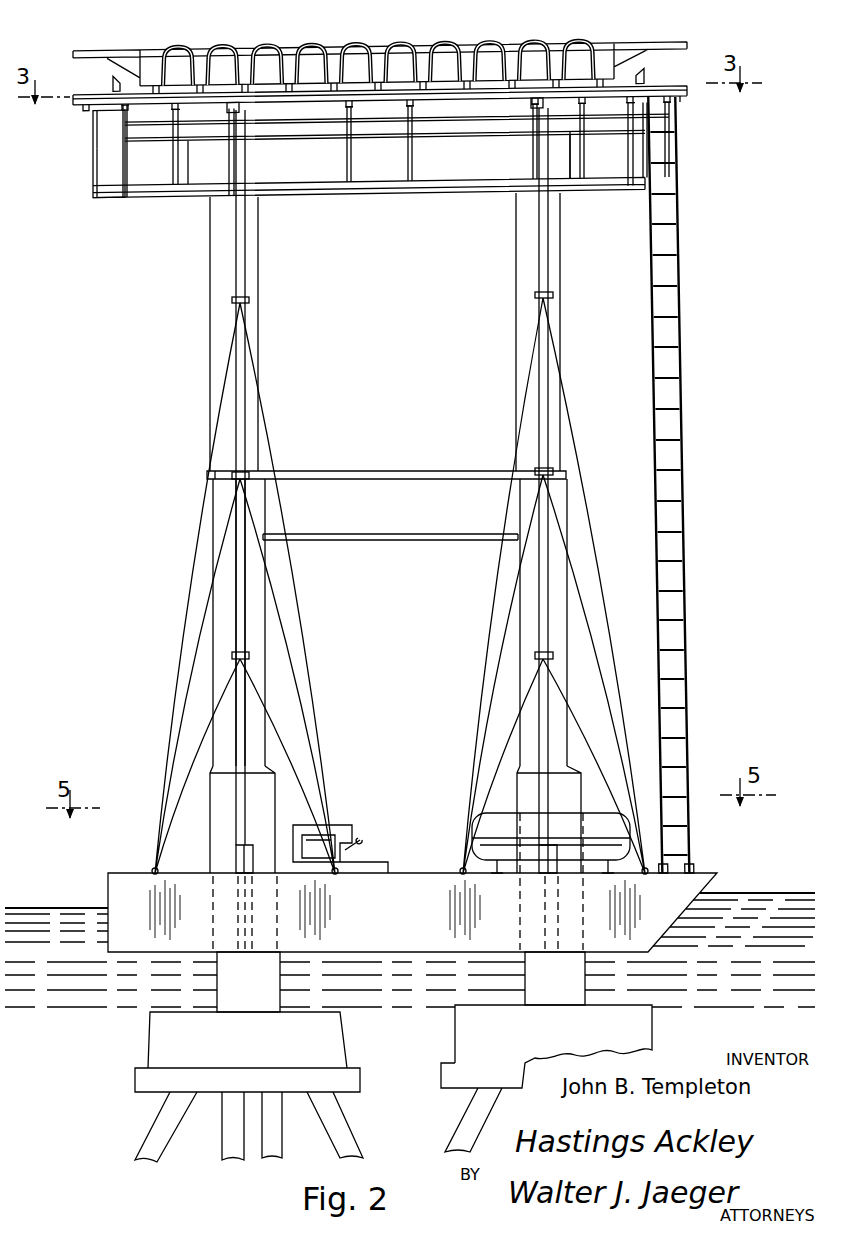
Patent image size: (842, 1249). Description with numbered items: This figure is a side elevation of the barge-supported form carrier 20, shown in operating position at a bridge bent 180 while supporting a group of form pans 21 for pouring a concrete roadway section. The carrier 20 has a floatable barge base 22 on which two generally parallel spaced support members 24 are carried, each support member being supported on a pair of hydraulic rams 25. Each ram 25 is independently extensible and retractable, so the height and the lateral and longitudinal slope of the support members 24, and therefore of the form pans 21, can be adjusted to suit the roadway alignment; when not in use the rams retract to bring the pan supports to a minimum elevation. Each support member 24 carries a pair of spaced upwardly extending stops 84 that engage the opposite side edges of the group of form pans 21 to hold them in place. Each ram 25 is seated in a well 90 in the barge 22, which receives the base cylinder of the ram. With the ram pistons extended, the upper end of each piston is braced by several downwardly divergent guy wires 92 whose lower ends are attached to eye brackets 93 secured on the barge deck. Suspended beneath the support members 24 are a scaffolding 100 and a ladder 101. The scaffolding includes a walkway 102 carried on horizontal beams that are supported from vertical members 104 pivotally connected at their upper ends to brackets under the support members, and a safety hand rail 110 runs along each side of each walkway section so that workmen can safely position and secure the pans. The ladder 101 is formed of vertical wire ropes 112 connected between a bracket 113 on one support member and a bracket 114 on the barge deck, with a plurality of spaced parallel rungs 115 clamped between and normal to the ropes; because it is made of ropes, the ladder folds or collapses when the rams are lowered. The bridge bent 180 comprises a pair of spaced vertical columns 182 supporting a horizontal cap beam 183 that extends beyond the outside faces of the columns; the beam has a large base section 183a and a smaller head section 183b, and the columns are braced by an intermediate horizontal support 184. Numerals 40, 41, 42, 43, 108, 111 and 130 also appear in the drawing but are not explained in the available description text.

The form carrier 20 is at (172, 334).
The form pans 21 is at (222, 50).
The floatable barge base 22 is at (104, 891).
The support members 24 is at (80, 110).
The hydraulic rams 25 is at (232, 393).
The lower mast section 40 is at (239, 807).
The second mast section 41 is at (244, 614).
The third mast section 42 is at (242, 420).
The upper mast section 43 is at (239, 262).
The stops 84 is at (113, 82).
The well 90 is at (236, 910).
The guy wires 92 is at (251, 374).
The eye brackets 93 is at (155, 873).
The scaffolding 100 is at (118, 160).
The ladder 101 is at (681, 364).
The walkway 102 is at (270, 190).
The vertical members 104 is at (164, 180).
The intermediate rail 108 is at (408, 166).
The safety hand rail 110 is at (316, 144).
The rail connector 111 is at (420, 162).
The vertical wire ropes 112 is at (686, 455).
The bracket 113 is at (666, 102).
The bracket 114 is at (686, 866).
The rungs 115 is at (680, 545).
The storage tank 130 is at (608, 804).
The bridge bent 180 is at (147, 1050).
The vertical columns 182 is at (226, 982).
The cap beam 183 is at (90, 183).
The base section 183a is at (118, 192).
The head section 183b is at (90, 128).
The intermediate horizontal support 184 is at (402, 472).